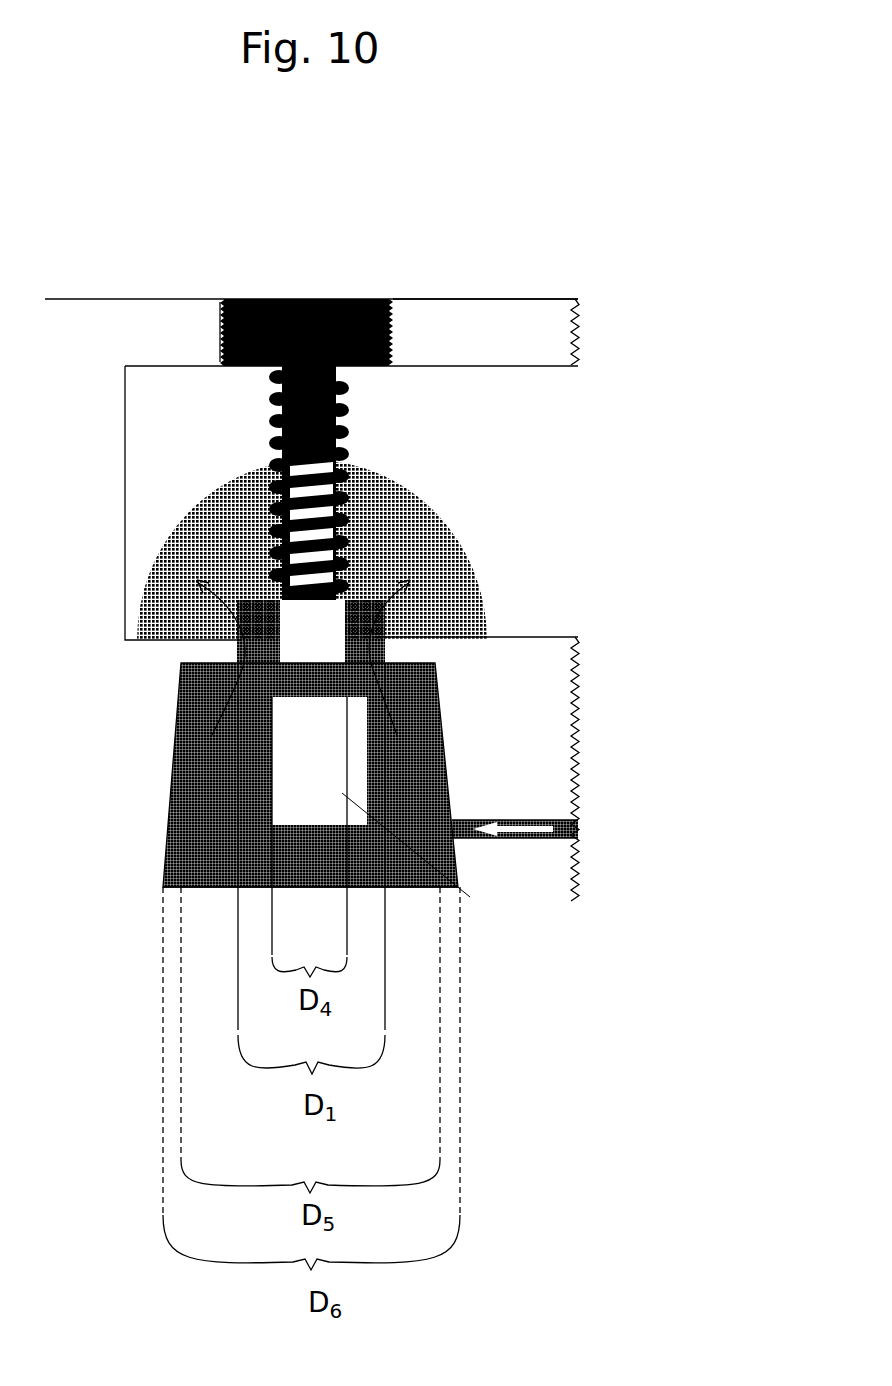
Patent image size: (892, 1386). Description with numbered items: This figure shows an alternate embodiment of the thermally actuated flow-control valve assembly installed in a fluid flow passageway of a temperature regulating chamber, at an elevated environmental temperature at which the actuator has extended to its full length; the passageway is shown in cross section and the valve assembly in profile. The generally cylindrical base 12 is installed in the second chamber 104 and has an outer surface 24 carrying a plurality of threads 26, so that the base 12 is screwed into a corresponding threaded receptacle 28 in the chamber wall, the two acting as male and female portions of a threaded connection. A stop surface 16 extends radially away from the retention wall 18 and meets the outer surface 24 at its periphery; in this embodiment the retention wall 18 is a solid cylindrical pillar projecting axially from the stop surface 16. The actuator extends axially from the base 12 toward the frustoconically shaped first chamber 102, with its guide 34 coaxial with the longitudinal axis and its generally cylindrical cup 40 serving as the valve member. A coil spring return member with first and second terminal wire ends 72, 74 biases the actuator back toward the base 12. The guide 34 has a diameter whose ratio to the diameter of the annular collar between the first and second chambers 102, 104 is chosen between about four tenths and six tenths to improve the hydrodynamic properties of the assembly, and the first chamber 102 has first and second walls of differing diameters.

The base 12 is at (415, 333).
The stop surface 16 is at (248, 368).
The retention wall 18 is at (333, 407).
The outer surface 24 is at (397, 298).
The threads 26 is at (217, 322).
The threaded receptacle 28 is at (253, 296).
The guide 34 is at (367, 626).
The cup 40 is at (240, 760).
The first terminal wire end 72 is at (412, 580).
The second terminal wire end 74 is at (343, 368).
The first chamber 102 is at (310, 876).
The second chamber 104 is at (184, 411).